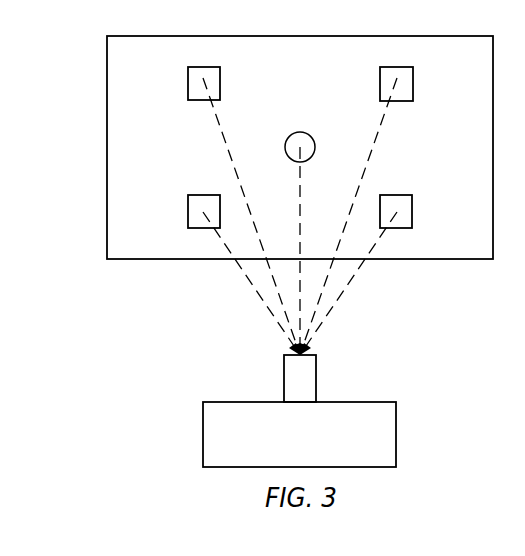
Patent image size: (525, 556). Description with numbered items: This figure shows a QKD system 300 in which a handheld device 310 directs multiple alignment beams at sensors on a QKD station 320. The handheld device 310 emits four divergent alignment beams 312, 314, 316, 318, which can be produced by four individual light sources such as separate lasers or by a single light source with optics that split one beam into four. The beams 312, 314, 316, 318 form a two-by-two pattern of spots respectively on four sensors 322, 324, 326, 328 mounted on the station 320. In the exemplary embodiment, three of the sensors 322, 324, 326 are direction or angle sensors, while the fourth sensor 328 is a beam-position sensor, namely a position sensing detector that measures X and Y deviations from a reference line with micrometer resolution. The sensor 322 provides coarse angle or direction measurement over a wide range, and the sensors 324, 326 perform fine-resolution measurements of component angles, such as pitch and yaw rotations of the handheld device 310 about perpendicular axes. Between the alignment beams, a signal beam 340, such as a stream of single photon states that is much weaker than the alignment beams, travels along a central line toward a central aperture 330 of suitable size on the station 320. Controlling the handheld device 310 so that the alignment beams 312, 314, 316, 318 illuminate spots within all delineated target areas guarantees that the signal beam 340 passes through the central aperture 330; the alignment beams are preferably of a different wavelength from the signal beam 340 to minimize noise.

The QKD system 300 is at (70, 100).
The handheld device 310 is at (315, 457).
The alignment beam 312 is at (268, 275).
The alignment beam 314 is at (283, 325).
The alignment beam 316 is at (327, 275).
The alignment beam 318 is at (317, 325).
The QKD station 320 is at (317, 88).
The sensor 322 is at (188, 83).
The sensor 324 is at (188, 212).
The sensor 326 is at (413, 83).
The sensor 328 is at (412, 212).
The central aperture 330 is at (300, 132).
The signal beam 340 is at (300, 210).